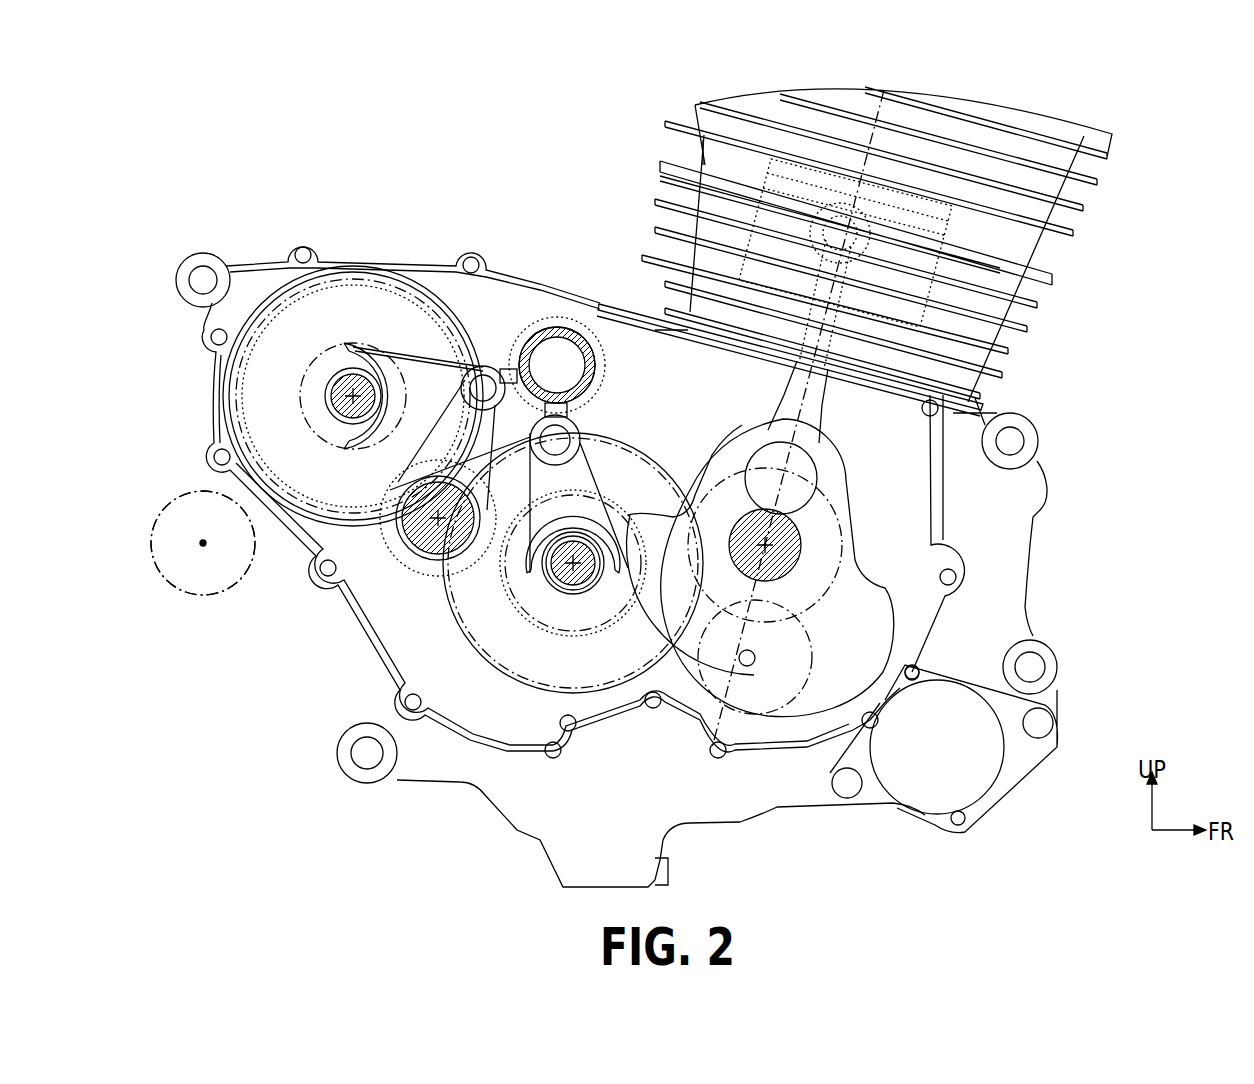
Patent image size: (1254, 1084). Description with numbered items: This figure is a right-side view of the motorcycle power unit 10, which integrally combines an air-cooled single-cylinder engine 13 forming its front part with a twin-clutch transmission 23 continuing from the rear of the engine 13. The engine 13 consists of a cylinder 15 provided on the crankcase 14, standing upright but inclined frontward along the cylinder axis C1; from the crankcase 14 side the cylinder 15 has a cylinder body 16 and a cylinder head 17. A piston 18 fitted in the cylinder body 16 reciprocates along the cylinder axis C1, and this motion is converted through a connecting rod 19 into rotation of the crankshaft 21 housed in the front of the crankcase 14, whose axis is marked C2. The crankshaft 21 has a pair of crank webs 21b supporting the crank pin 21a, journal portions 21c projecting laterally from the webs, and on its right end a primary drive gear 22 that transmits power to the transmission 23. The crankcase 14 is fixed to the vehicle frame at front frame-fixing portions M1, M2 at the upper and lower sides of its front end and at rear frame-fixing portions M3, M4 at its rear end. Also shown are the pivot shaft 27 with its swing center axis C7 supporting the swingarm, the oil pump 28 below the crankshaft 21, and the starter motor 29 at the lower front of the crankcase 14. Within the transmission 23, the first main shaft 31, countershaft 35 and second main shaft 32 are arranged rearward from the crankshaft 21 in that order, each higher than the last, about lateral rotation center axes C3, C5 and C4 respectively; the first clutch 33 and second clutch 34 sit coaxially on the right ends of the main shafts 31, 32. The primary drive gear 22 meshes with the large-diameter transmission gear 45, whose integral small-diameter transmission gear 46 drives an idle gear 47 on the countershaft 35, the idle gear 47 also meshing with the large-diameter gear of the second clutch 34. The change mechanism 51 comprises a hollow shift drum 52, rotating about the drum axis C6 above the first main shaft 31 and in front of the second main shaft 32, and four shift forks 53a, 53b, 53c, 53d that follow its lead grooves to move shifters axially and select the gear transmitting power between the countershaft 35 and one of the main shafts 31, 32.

The cylinder axis C1 is at (895, 165).
The cylinder head 17 is at (1100, 215).
The piston 18 is at (1000, 283).
The cylinder body 16 is at (1010, 333).
The cylinder 15 is at (900, 240).
The connecting rod 19 is at (958, 382).
The rear frame-fixing portion M3 is at (197, 272).
The second clutch 34 is at (355, 266).
The large-diameter transmission gear 45 is at (385, 262).
The shift drum 52 is at (552, 330).
The change mechanism 51 is at (557, 301).
The drum axis C6 is at (562, 360).
The first clutch 33 is at (602, 430).
The crank webs 21b is at (720, 462).
The crank pin 21a is at (805, 465).
The crankshaft 21 is at (860, 502).
The front frame-fixing portion M1 is at (1040, 448).
The crankshaft axis C2 is at (770, 545).
The primary drive gear 22 is at (860, 556).
The crankcase 14 is at (944, 532).
The engine 13 is at (1040, 537).
The power unit 10 is at (784, 701).
The second main shaft 32 is at (365, 385).
The small-diameter transmission gear 46 is at (398, 350).
The second main axis C4 is at (345, 398).
The shift fork 53c is at (340, 430).
The shift fork 53d is at (392, 500).
The swing center axis C7 is at (200, 540).
The pivot shaft 27 is at (196, 598).
The countershaft 35 is at (405, 535).
The counter axis C5 is at (438, 525).
The idle gear 47 is at (352, 624).
The twin-clutch transmission 23 is at (395, 640).
The shift fork 53b is at (463, 613).
The shift fork 53a is at (537, 575).
The first main axis C3 is at (573, 572).
The first main shaft 31 is at (585, 580).
The journal portions 21c is at (818, 592).
The front frame-fixing portion M2 is at (1060, 668).
The starter motor 29 is at (980, 792).
The oil pump 28 is at (773, 700).
The rear frame-fixing portion M4 is at (350, 770).